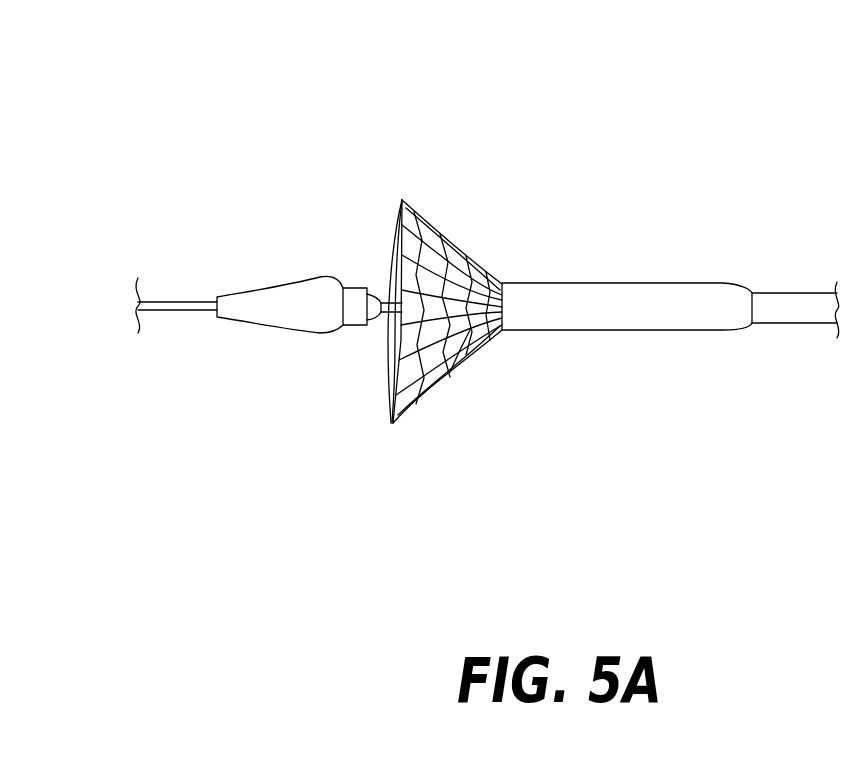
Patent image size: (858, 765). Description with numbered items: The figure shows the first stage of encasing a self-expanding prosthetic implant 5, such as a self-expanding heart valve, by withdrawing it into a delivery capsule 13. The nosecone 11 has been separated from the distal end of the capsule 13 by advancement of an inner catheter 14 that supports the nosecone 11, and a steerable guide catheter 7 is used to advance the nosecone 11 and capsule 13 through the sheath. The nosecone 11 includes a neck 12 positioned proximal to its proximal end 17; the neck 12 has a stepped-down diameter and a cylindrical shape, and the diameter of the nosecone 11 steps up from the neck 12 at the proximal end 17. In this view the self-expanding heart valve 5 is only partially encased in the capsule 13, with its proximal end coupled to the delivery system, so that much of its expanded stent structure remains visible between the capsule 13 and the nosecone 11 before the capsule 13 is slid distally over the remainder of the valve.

The prosthetic implant 5 is at (460, 367).
The steerable guide catheter 7 is at (777, 308).
The nosecone 11 is at (298, 307).
The neck 12 is at (352, 300).
The capsule 13 is at (540, 308).
The inner catheter 14 is at (389, 292).
The proximal end 17 is at (323, 318).